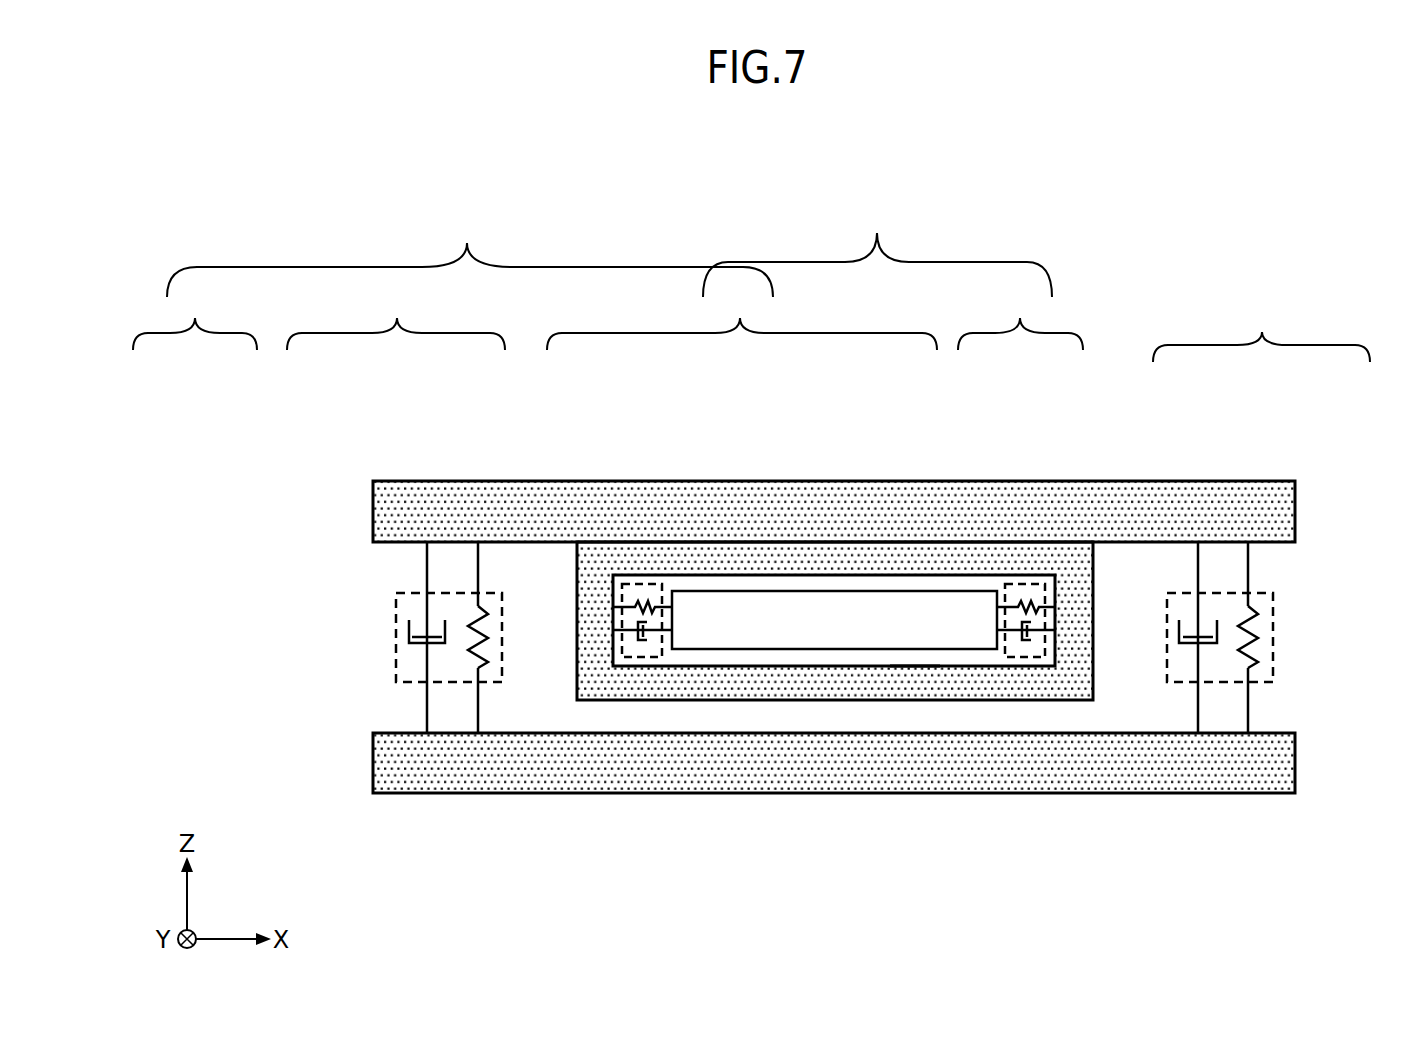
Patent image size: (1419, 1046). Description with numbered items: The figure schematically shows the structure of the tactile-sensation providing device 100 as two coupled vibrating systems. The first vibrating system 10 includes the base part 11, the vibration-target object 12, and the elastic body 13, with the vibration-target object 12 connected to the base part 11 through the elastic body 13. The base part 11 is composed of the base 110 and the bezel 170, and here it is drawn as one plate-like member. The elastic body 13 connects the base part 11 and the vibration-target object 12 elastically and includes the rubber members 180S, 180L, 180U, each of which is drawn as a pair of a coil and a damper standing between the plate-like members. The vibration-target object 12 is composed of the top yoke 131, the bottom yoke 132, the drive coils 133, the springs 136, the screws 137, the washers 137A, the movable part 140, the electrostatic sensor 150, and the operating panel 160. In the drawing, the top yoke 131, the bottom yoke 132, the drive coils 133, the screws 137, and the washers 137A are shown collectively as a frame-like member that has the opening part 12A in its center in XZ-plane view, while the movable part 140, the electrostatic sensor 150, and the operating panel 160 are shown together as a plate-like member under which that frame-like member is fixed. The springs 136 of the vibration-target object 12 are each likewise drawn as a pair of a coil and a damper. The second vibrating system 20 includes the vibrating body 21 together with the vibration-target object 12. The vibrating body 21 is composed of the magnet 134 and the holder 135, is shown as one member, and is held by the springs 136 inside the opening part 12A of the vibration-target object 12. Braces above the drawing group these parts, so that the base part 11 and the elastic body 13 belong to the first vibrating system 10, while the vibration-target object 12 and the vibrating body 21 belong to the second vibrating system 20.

The tactile-sensation providing device 100 is at (1268, 190).
The first vibrating system 10 is at (470, 253).
The second vibrating system 20 is at (877, 249).
The base part 11 is at (714, 541).
The base 110 is at (723, 572).
The bezel 170 is at (397, 753).
The elastic body 13 is at (828, 511).
The rubber member 180S is at (829, 542).
The rubber member 180L is at (829, 542).
The rubber member 180U is at (449, 593).
The vibration-target object 12 is at (834, 591).
The springs 136 is at (642, 585).
The top yoke 131 is at (835, 525).
The bottom yoke 132 is at (835, 525).
The drive coils 133 is at (835, 525).
The screws 137 is at (835, 525).
The washers 137A is at (738, 562).
The movable part 140 is at (834, 446).
The electrostatic sensor 150 is at (834, 446).
The operating panel 160 is at (875, 510).
The vibrating body 21 is at (877, 469).
The magnet 134 is at (868, 499).
The holder 135 is at (930, 618).
The opening part 12A is at (902, 666).